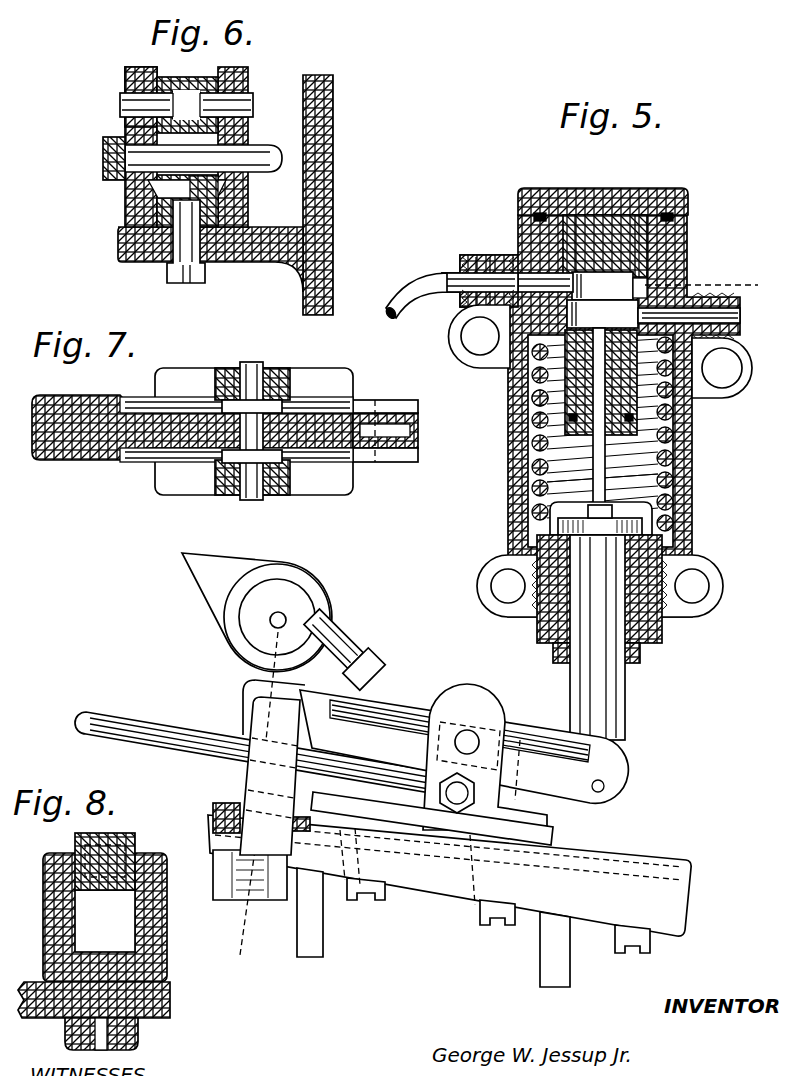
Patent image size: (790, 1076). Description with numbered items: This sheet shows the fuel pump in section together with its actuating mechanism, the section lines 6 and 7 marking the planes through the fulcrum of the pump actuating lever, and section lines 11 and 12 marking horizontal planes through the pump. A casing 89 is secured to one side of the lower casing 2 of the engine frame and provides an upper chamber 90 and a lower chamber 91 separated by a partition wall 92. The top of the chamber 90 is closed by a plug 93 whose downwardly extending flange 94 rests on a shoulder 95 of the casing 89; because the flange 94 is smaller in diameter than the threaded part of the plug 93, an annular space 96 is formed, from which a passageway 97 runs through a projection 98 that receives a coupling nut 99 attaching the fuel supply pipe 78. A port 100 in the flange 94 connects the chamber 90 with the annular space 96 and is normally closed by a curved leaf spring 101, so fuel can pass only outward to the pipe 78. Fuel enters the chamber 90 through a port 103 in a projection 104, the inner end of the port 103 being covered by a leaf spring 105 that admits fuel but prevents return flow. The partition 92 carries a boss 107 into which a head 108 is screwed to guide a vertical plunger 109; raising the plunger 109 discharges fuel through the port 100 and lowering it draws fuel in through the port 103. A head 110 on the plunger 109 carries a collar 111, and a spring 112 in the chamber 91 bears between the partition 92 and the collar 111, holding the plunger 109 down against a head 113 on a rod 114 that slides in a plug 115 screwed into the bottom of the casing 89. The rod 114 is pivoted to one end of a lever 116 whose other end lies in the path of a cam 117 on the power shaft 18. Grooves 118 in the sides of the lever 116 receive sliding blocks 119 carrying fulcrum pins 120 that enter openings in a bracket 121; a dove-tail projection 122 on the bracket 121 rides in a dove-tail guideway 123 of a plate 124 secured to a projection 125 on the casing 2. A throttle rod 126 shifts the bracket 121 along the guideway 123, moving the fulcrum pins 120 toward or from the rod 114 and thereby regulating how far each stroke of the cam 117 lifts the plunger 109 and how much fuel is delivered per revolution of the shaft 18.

In FIG. 6, the lower casing 2 is at (334, 110).
In FIG. 8, the clamp 6 is at (470, 718).
In FIG. 8, the clamp 7 is at (243, 696).
In FIG. 5, the fuel pipe 11 is at (432, 282).
In FIG. 5, the pipe 12 is at (522, 300).
In FIG. 8, the power shaft 18 is at (292, 592).
In FIG. 5, the fuel supply pipe 78 is at (394, 300).
In FIG. 5, the casing 89 is at (695, 453).
In FIG. 5, the upper chamber 90 is at (602, 314).
In FIG. 5, the lower chamber 91 is at (533, 471).
In FIG. 5, the partition wall 92 is at (694, 362).
In FIG. 5, the plug 93 is at (612, 198).
In FIG. 5, the flange 94 is at (660, 300).
In FIG. 5, the shoulder 95 is at (478, 333).
In FIG. 5, the annular space 96 is at (660, 287).
In FIG. 5, the passageway 97 is at (472, 260).
In FIG. 5, the projection 98 is at (500, 262).
In FIG. 5, the coupling nut 99 is at (478, 256).
In FIG. 5, the port 100 is at (562, 193).
In FIG. 5, the curved leaf spring 101 is at (535, 262).
In FIG. 5, the port 103 is at (742, 355).
In FIG. 5, the projection 104 is at (715, 325).
In FIG. 5, the leaf spring 105 is at (602, 286).
In FIG. 5, the boss 107 is at (640, 412).
In FIG. 5, the head 108 is at (562, 432).
In FIG. 5, the plunger 109 is at (612, 472).
In FIG. 5, the head 110 is at (640, 512).
In FIG. 5, the collar 111 is at (552, 521).
In FIG. 5, the spring 112 is at (532, 401).
In FIG. 5, the head 113 is at (645, 530).
In FIG. 7, the rod 114 is at (385, 447).
In FIG. 5, the rod 114 is at (628, 690).
In FIG. 5, the plug 115 is at (550, 648).
In FIG. 6, the lever 116 is at (240, 75).
In FIG. 7, the lever 116 is at (80, 455).
In FIG. 8, the cam 117 is at (195, 582).
In FIG. 7, the grooves 118 is at (185, 405).
In FIG. 8, the grooves 118 is at (370, 712).
In FIG. 6, the blocks 119 is at (150, 126).
In FIG. 7, the blocks 119 is at (285, 403).
In FIG. 8, the blocks 119 is at (517, 740).
In FIG. 6, the fulcrum pins 120 is at (120, 104).
In FIG. 7, the fulcrum pins 120 is at (250, 364).
In FIG. 8, the fulcrum pins 120 is at (460, 735).
In FIG. 6, the bracket 121 is at (125, 72).
In FIG. 7, the bracket 121 is at (160, 478).
In FIG. 8, the bracket 121 is at (347, 830).
In FIG. 6, the dove-tail projection 122 is at (125, 190).
In FIG. 8, the dove-tail projection 122 is at (470, 840).
In FIG. 6, the dove-tail guideway 123 is at (222, 190).
In FIG. 6, the plate 124 is at (135, 210).
In FIG. 8, the plate 124 is at (345, 832).
In FIG. 6, the projection 125 is at (128, 245).
In FIG. 6, the throttle rod 126 is at (282, 160).
In FIG. 8, the throttle rod 126 is at (100, 712).